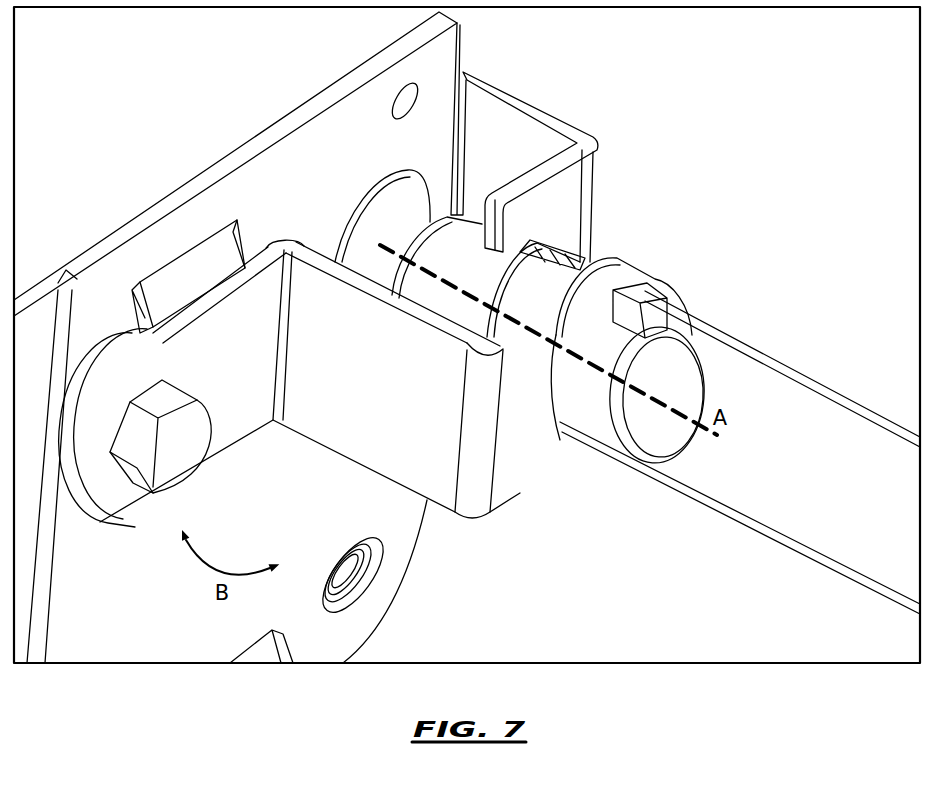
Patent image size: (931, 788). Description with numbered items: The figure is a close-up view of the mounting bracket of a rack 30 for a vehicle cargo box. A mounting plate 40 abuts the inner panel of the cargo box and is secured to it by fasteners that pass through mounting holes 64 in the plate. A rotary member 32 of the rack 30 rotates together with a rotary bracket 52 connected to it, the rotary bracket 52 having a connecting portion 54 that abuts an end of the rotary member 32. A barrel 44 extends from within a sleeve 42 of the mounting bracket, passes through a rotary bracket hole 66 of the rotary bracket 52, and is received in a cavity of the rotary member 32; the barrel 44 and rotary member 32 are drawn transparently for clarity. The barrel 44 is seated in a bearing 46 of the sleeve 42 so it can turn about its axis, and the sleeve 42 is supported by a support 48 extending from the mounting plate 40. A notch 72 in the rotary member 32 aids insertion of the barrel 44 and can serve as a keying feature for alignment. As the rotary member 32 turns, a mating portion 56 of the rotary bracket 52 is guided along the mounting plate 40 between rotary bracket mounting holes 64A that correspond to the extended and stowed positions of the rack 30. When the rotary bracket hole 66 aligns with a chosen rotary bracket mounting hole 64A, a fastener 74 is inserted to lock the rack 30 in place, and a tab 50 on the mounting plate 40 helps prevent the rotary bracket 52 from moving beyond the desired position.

The rack 30 is at (790, 196).
The rotary member 32 is at (793, 522).
The mounting plate 40 is at (163, 623).
The sleeve 42 is at (398, 213).
The barrel 44 is at (667, 365).
The bearing 46 is at (477, 220).
The support 48 is at (565, 195).
The tab 50 is at (198, 268).
The rotary bracket 52 is at (365, 445).
The connecting portion 54 is at (568, 450).
The mating portion 56 is at (128, 390).
The mounting holes 64 is at (407, 100).
The rotary bracket mounting holes 64A is at (357, 572).
The rotary bracket hole 66 is at (128, 497).
The notch 72 is at (633, 300).
The fastener 74 is at (175, 453).